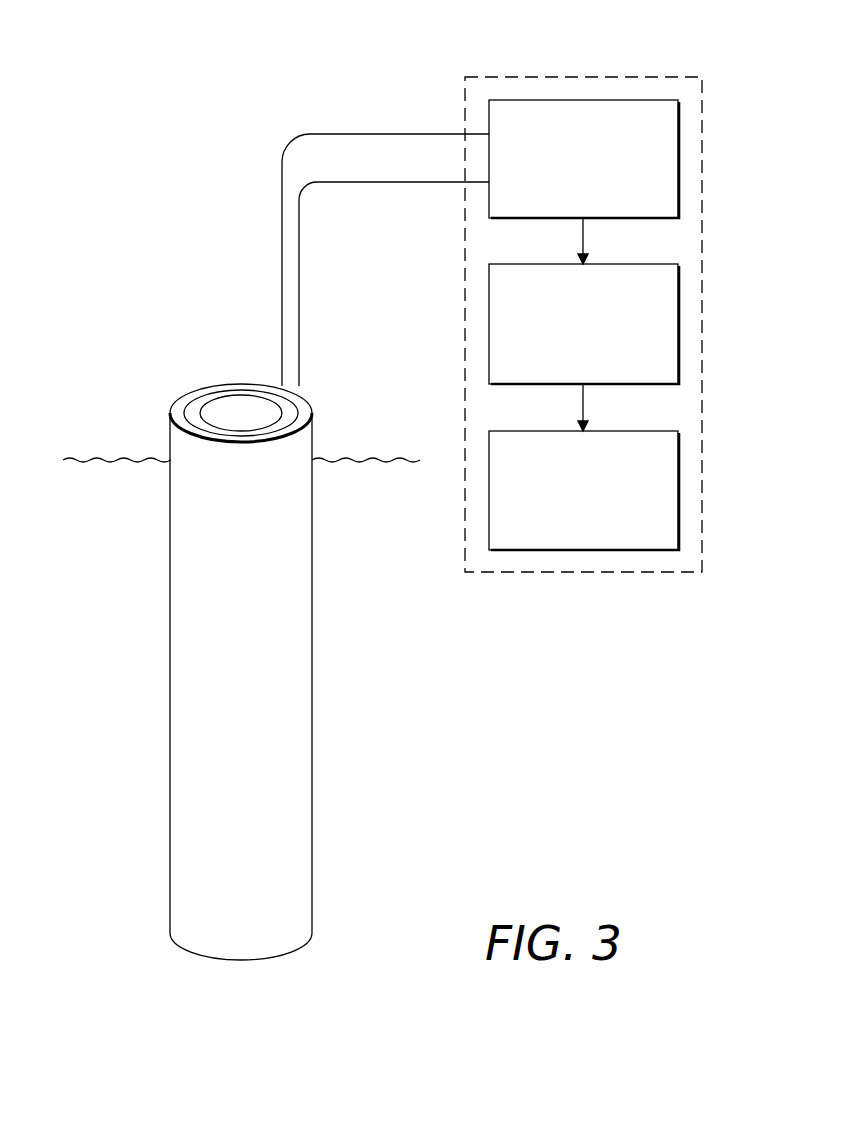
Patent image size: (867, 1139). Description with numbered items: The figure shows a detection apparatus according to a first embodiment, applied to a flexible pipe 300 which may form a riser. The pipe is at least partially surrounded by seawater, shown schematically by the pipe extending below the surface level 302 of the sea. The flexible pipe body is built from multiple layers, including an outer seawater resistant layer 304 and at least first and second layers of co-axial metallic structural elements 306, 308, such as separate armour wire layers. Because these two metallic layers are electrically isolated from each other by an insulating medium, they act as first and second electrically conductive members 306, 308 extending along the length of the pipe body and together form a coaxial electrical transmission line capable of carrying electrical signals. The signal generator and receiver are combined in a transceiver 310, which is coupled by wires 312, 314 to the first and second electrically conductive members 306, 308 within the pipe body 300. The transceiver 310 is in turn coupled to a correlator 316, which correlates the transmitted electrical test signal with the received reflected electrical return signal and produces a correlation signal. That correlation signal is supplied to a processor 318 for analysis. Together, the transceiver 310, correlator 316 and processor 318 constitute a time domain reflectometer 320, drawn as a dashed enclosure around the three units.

The flexible pipe 300 is at (182, 783).
The surface level of the sea 302 is at (389, 459).
The outer seawater resistant layer 304 is at (186, 397).
The first electrically conductive member 306 is at (209, 390).
The second electrically conductive member 308 is at (246, 395).
The transceiver 310 is at (679, 113).
The wire 312 is at (384, 134).
The wire 314 is at (388, 182).
The correlator 316 is at (679, 278).
The processor 318 is at (679, 445).
The time domain reflectometer 320 is at (676, 76).